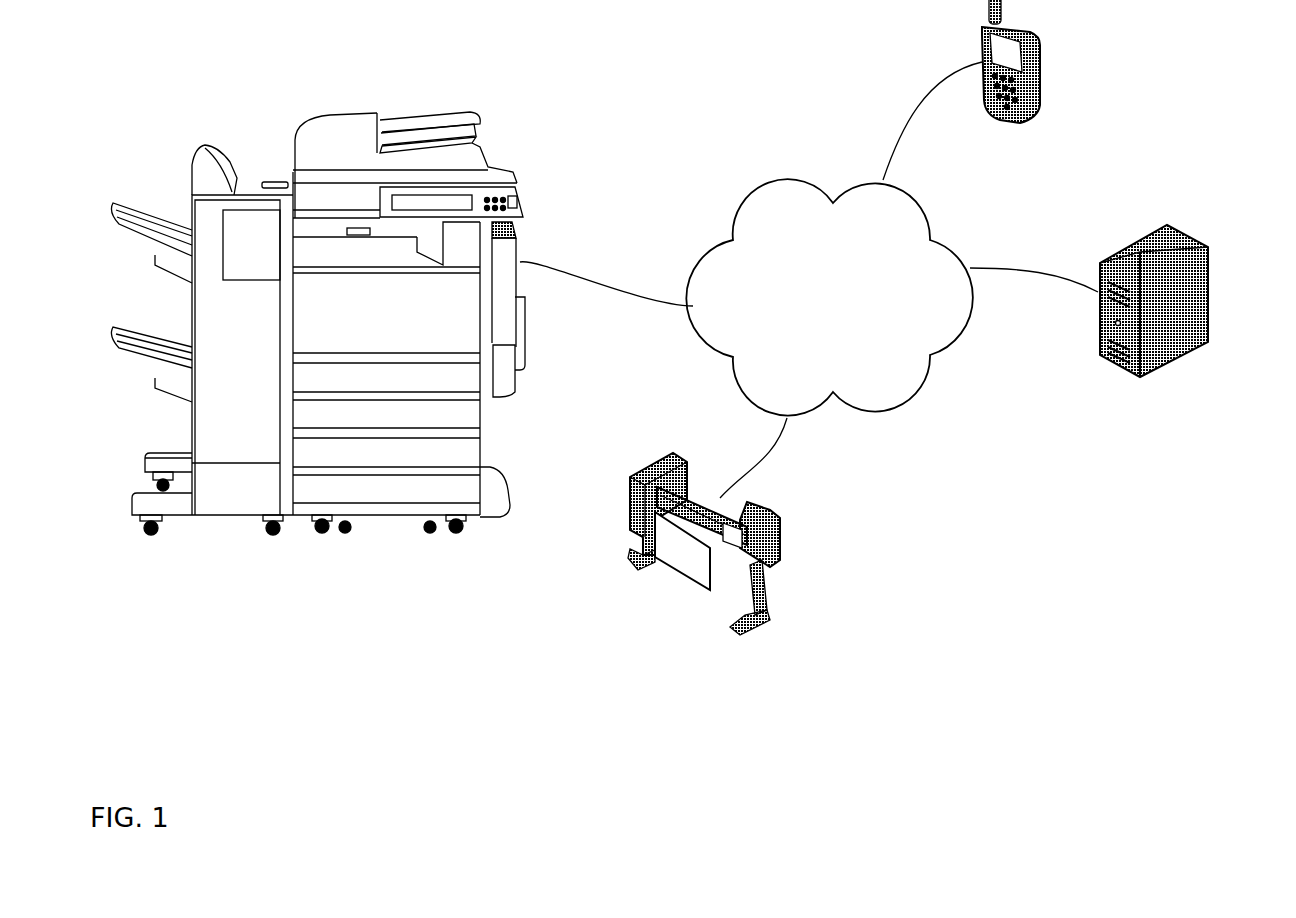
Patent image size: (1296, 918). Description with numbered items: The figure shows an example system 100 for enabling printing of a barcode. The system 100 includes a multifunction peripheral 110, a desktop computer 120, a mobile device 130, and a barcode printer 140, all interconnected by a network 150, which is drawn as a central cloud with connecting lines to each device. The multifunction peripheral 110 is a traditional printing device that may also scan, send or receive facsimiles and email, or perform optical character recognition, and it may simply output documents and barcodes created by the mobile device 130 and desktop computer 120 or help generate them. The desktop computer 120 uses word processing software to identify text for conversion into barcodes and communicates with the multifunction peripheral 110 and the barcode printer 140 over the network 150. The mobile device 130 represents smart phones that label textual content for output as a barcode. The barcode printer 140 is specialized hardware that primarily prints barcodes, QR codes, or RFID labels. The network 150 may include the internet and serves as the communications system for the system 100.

The system 100 is at (972, 506).
The multifunction peripheral 110 is at (318, 352).
The desktop computer 120 is at (1155, 318).
The mobile device 130 is at (1011, 80).
The barcode printer 140 is at (704, 555).
The network 150 is at (829, 297).